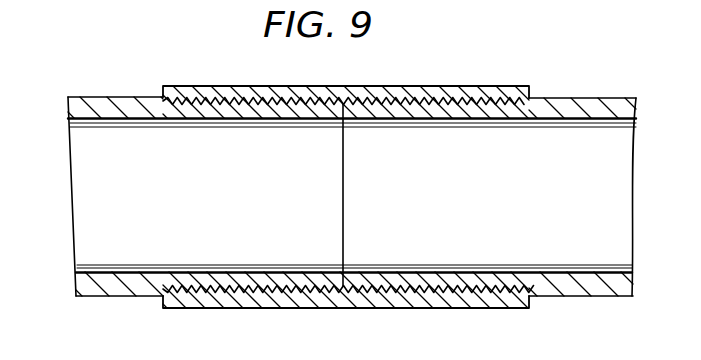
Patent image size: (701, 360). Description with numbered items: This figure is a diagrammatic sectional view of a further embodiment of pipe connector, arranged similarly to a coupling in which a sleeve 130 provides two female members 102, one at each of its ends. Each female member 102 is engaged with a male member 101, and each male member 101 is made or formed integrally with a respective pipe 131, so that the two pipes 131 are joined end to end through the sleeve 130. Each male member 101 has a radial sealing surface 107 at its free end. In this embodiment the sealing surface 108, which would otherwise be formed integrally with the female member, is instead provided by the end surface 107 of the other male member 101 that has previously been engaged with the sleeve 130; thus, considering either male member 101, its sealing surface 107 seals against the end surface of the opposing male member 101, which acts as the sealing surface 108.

The male member 101 is at (140, 107).
The female member 102 is at (197, 93).
The sealing surface 107 is at (342, 106).
The sealing surface 108 is at (338, 118).
The sleeve 130 is at (336, 85).
The pipe 131 is at (590, 143).